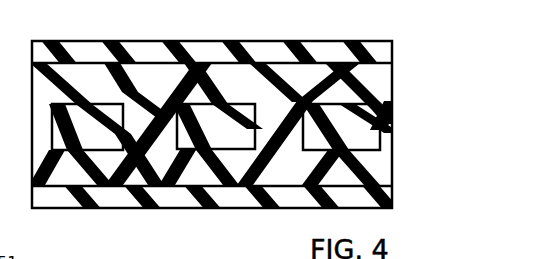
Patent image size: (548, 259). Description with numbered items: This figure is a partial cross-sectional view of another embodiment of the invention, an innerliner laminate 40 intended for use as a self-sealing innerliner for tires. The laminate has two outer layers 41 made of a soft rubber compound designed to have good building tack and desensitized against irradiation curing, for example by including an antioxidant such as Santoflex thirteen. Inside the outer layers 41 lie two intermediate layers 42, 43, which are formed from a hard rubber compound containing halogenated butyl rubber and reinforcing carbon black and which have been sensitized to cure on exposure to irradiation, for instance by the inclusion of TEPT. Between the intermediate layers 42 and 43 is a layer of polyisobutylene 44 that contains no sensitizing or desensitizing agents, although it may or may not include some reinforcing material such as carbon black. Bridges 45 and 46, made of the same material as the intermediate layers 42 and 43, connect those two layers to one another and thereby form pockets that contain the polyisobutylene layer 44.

The innerliner laminate 40 is at (117, 36).
The outer layers 41 is at (150, 54).
The intermediate layer 42 is at (363, 84).
The intermediate layer 43 is at (218, 168).
The layer of polyisobutylene 44 is at (253, 111).
The bridge 45 is at (143, 117).
The bridge 46 is at (275, 126).